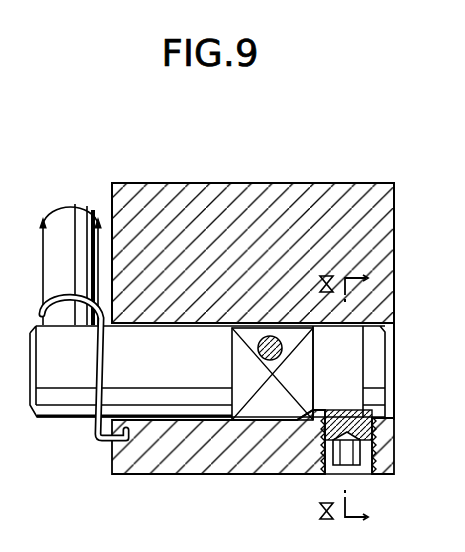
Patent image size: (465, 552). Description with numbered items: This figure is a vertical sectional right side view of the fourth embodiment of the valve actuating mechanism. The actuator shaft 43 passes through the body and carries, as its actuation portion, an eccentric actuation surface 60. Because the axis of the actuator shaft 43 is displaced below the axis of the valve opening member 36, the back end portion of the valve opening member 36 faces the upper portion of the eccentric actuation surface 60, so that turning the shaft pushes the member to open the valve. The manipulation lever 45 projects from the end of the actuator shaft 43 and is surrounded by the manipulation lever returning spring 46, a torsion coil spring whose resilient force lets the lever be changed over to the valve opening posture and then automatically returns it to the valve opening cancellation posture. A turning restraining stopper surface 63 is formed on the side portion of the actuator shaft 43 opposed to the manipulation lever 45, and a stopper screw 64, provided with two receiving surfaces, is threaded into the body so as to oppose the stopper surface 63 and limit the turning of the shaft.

The valve opening member 36 is at (268, 338).
The actuator shaft 43 is at (168, 426).
The manipulation lever 45 is at (64, 212).
The manipulation lever returning spring 46 is at (95, 402).
The eccentric actuation surface 60 is at (247, 333).
The turning restraining stopper surface 63 is at (320, 410).
The stopper screw 64 is at (310, 455).